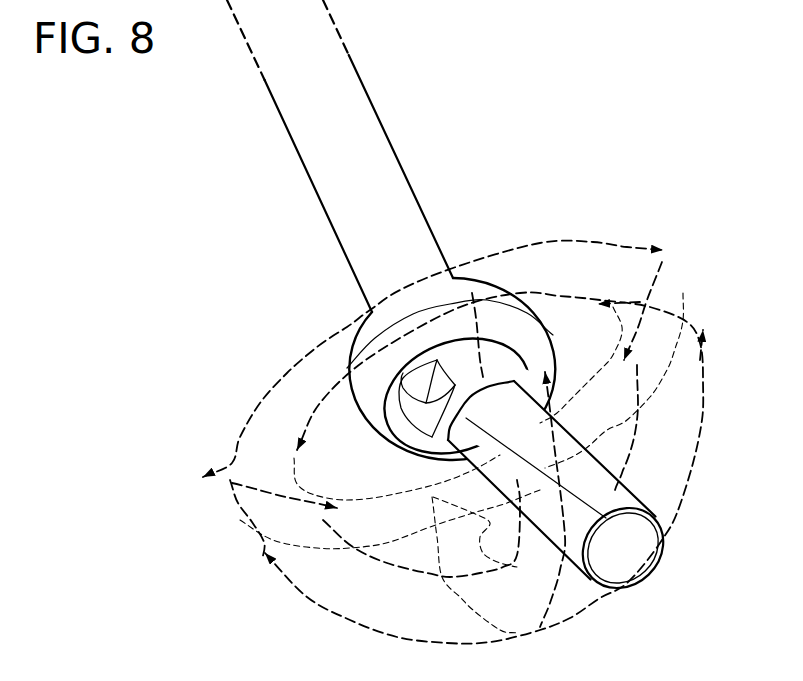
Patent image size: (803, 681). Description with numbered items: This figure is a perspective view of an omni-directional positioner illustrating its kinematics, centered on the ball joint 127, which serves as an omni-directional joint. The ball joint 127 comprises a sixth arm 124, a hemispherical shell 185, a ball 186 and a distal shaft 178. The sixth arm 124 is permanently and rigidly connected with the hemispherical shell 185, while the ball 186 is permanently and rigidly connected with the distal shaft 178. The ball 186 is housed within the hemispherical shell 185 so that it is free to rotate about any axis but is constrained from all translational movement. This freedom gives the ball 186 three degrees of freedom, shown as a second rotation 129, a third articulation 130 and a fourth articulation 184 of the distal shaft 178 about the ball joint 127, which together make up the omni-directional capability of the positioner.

The sixth arm 124 is at (405, 162).
The ball joint 127 is at (606, 90).
The second rotation 129 is at (540, 373).
The third articulation 130 is at (546, 236).
The distal shaft 178 is at (603, 465).
The fourth articulation 184 is at (701, 320).
The hemispherical shell 185 is at (357, 347).
The ball 186 is at (418, 416).